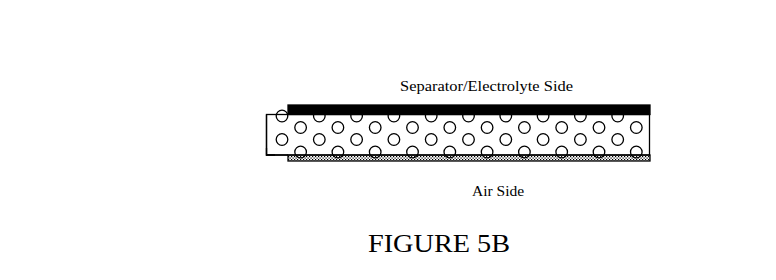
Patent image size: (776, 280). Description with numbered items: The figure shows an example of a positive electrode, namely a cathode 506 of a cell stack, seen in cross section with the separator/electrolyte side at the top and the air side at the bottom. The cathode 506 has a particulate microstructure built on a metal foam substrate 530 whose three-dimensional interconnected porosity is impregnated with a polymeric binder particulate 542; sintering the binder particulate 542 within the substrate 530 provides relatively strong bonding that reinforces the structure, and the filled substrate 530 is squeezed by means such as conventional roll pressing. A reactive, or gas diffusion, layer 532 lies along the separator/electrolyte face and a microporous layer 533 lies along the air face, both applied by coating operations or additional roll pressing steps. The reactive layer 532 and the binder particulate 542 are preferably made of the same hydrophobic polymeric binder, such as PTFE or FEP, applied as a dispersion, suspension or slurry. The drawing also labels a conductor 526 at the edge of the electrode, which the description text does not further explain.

The cathode 506 is at (427, 177).
The conductor 526 is at (264, 141).
The metal foam substrate 530 is at (272, 155).
The reactive layer 532 is at (323, 105).
The microporous layer 533 is at (605, 158).
The polymeric binder particulate 542 is at (638, 128).